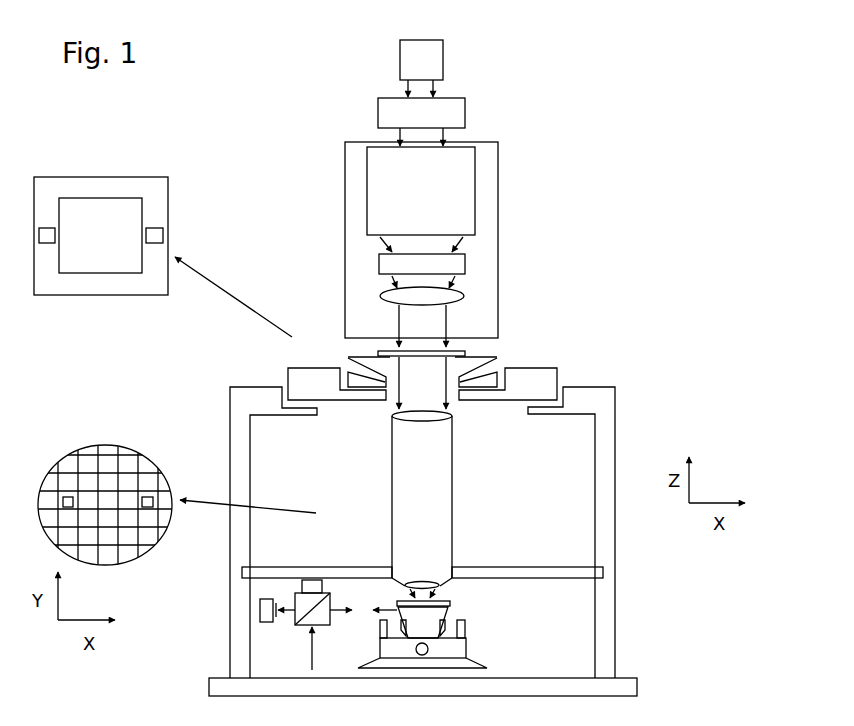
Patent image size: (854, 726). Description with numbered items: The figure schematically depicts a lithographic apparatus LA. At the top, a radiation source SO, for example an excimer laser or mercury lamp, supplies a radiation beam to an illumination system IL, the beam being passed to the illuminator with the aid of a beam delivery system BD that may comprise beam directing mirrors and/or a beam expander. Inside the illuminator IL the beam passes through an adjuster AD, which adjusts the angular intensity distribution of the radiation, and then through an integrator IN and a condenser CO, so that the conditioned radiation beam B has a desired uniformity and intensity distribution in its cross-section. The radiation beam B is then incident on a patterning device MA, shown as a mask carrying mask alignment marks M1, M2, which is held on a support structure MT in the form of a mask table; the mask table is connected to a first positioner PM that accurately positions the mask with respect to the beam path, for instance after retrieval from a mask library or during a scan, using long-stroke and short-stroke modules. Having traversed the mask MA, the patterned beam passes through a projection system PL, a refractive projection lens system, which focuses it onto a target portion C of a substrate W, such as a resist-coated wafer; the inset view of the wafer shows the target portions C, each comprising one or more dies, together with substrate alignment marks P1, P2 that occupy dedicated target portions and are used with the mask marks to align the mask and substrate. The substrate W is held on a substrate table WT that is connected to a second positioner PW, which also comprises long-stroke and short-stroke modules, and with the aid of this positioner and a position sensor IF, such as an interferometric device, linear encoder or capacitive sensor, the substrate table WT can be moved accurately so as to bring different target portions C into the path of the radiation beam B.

The lithographic apparatus LA is at (615, 243).
The radiation source SO is at (445, 62).
The beam delivery system BD is at (466, 122).
The illumination system IL is at (498, 158).
The adjuster AD is at (476, 198).
The integrator IN is at (466, 262).
The condenser CO is at (455, 292).
The radiation beam B is at (423, 347).
The patterning device MA is at (378, 352).
The mask alignment mark M1 is at (157, 228).
The mask alignment mark M2 is at (48, 228).
The support structure MT is at (497, 360).
The first positioner PM is at (288, 368).
The projection system PL is at (453, 484).
The substrate W is at (396, 601).
The target portion C is at (108, 496).
The substrate alignment mark P1 is at (68, 497).
The substrate alignment mark P2 is at (147, 497).
The substrate table WT is at (449, 607).
The second positioner PW is at (470, 652).
The position sensor IF is at (290, 632).